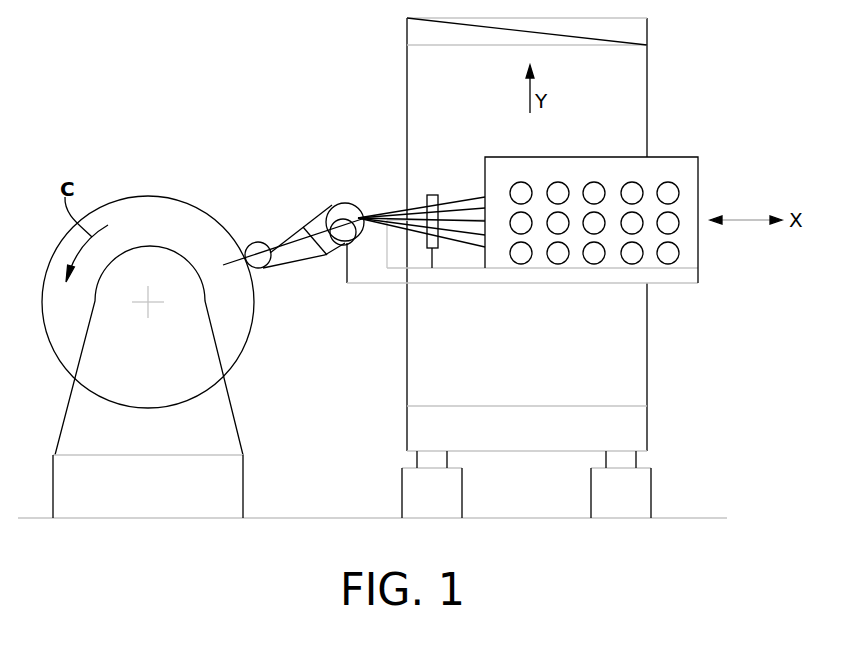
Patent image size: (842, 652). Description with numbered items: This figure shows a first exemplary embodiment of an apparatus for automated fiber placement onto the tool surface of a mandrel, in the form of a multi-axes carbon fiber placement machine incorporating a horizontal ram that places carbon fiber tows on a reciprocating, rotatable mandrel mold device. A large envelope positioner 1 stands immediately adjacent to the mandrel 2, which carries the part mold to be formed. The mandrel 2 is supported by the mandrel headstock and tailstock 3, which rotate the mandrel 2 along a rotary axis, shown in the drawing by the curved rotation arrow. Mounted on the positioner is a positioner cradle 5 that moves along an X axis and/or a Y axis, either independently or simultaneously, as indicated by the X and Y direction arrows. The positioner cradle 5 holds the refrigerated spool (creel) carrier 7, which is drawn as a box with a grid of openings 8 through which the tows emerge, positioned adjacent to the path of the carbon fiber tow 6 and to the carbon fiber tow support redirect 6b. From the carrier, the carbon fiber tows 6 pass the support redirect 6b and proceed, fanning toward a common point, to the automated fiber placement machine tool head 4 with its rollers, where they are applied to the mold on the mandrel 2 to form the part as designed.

The large envelope positioner 1 is at (647, 83).
The mandrel 2 is at (207, 213).
The mandrel headstock and tailstock 3 is at (234, 414).
The automated fiber placement machine tool head 4 is at (340, 203).
The positioner cradle 5 is at (613, 275).
The carbon fiber tow 6 is at (465, 198).
The carbon fiber tow support redirect 6b is at (431, 195).
The refrigerated spool (creel) carrier 7 is at (700, 172).
The guide holes 8 is at (642, 190).